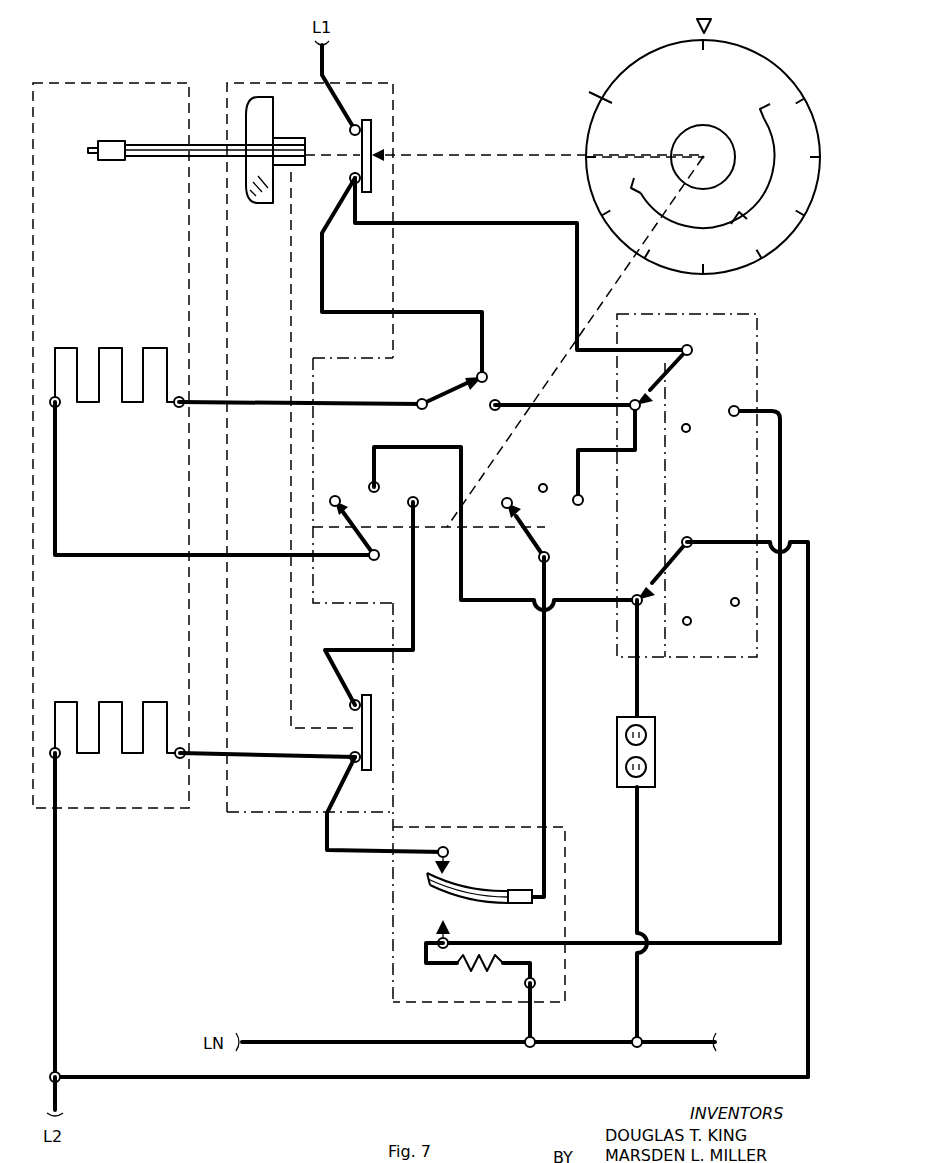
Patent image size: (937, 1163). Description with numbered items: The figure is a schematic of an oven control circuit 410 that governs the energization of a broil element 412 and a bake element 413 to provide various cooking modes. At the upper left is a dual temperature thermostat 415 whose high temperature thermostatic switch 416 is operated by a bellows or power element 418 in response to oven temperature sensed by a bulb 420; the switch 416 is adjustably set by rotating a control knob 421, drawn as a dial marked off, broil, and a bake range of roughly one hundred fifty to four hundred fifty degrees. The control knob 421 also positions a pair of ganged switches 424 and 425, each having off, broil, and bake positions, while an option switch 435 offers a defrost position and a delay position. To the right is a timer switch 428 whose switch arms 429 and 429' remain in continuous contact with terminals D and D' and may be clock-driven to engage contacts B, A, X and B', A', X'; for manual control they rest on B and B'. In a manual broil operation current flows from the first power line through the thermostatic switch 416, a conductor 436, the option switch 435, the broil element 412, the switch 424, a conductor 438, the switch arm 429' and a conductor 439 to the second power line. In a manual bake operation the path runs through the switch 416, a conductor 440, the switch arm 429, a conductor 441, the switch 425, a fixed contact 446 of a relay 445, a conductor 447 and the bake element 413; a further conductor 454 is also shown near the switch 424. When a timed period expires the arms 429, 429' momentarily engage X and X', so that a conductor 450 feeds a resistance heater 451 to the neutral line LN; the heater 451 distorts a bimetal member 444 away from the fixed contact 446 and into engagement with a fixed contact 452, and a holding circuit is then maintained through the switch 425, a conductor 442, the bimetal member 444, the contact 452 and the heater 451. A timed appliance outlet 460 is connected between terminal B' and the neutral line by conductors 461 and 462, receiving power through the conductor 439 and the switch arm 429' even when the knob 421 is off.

The oven control circuit 410 is at (470, 118).
The broil element 412 is at (106, 348).
The bake element 413 is at (106, 702).
The dual temperature thermostat 415 is at (237, 83).
The high temperature thermostatic switch 416 is at (372, 135).
The bellows or power element 418 is at (266, 206).
The bulb 420 is at (107, 141).
The control knob 421 is at (601, 103).
The ganged switch 424 is at (356, 543).
The ganged switch 425 is at (526, 540).
The timer switch 428 is at (760, 323).
The switch arm 429 is at (675, 377).
The switch arm 429' is at (674, 571).
The option switch 435 is at (444, 393).
The conductor 436 is at (440, 312).
The conductor 438 is at (528, 604).
The conductor 439 is at (786, 540).
The conductor 440 is at (440, 223).
The conductor 441 is at (100, 83).
The conductor 442 is at (547, 690).
The bimetal member 444 is at (480, 890).
The relay 445 is at (565, 868).
The fixed contact 446 is at (458, 856).
The conductor 447 is at (356, 856).
The conductor 450 is at (770, 410).
The resistance heater 451 is at (466, 966).
The fixed contact 452 is at (455, 935).
The conductor 454 is at (415, 635).
The timed appliance outlet 460 is at (657, 757).
The conductor 461 is at (640, 690).
The conductor 462 is at (640, 870).